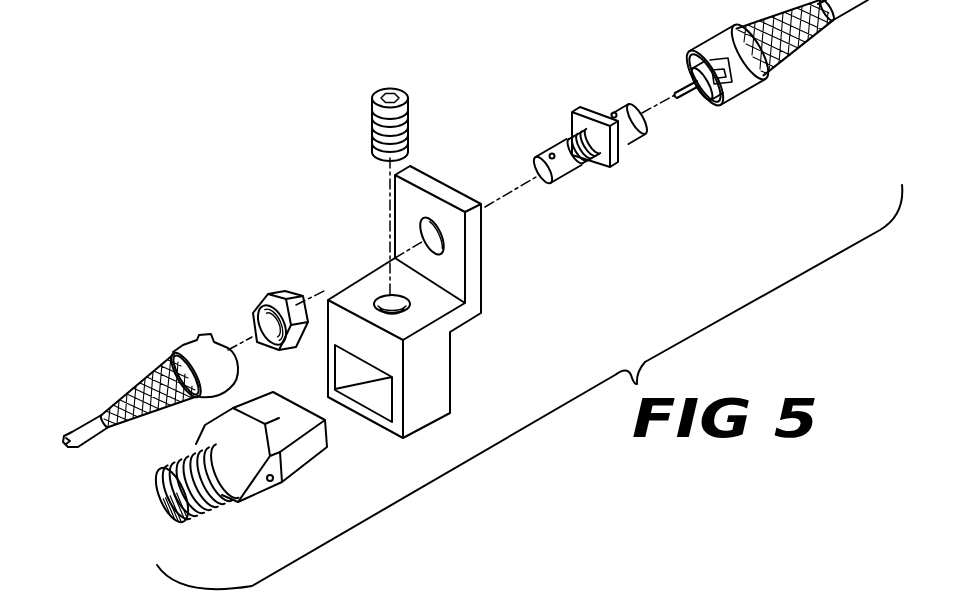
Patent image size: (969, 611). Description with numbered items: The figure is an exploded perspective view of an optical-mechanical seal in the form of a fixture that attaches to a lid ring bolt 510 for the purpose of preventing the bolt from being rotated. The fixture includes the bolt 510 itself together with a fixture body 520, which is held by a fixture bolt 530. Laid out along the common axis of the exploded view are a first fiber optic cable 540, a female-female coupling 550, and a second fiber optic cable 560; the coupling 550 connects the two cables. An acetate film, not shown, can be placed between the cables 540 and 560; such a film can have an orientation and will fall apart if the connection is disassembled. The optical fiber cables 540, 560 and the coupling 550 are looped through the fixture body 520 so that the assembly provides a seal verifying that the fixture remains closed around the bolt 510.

The lid ring bolt 510 is at (167, 497).
The fixture body 520 is at (450, 390).
The fixture bolt 530 is at (373, 92).
The first fiber optic cable 540 is at (163, 362).
The female-female coupling 550 is at (608, 171).
The second fiber optic cable 560 is at (798, 46).